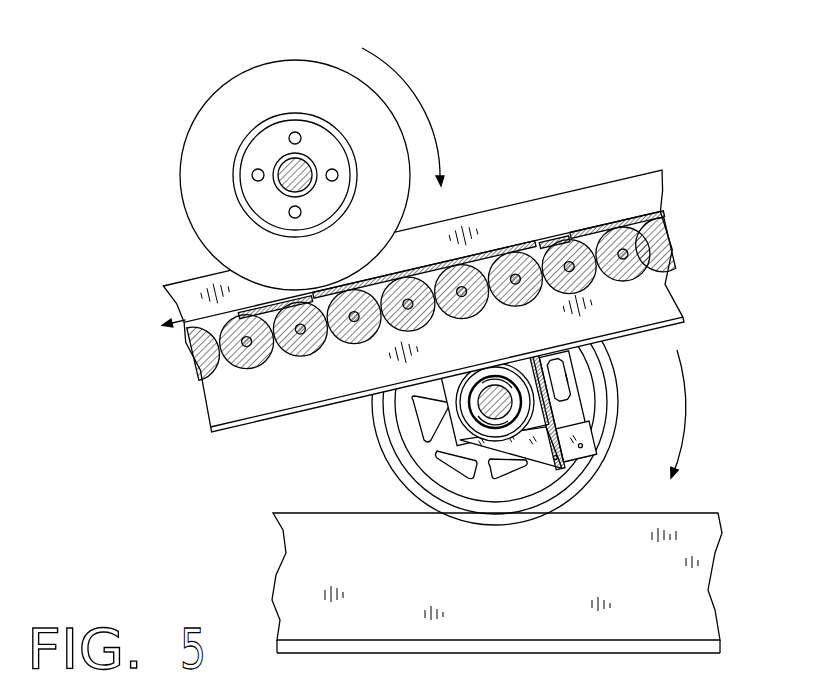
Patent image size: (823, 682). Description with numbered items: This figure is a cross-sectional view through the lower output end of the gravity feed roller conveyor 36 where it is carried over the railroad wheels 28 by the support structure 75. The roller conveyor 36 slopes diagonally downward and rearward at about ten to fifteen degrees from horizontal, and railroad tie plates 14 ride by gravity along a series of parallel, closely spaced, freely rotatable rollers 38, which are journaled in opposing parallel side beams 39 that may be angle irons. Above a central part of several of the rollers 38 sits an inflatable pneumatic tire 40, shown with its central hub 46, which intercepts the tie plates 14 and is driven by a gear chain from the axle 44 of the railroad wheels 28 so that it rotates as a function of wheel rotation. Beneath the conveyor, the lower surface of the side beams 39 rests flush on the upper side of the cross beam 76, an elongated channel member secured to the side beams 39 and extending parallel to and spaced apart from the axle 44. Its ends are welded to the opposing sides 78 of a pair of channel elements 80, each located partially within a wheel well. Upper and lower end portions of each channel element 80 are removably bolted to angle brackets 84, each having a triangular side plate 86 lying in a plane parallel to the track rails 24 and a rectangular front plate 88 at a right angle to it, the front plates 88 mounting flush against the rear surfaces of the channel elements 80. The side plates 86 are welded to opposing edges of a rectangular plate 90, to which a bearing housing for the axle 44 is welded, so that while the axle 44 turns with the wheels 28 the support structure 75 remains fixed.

The railroad tie plates 14 is at (493, 240).
The track rails 24 is at (695, 580).
The railroad wheels 28 is at (380, 450).
The gravity feed roller conveyor 36 is at (680, 217).
The rollers 38 is at (610, 232).
The side beams 39 is at (655, 285).
The inflatable pneumatic tire 40 is at (183, 150).
The axle 44 is at (478, 412).
The wheel hub 46 is at (286, 162).
The support structure 75 is at (577, 375).
The cross beam 76 is at (540, 420).
The opposing sides 78 is at (570, 440).
The channel elements 80 is at (582, 453).
The angle brackets 84 is at (566, 470).
The side plate 86 is at (500, 455).
The front plate 88 is at (580, 446).
The rectangular plate 90 is at (540, 462).